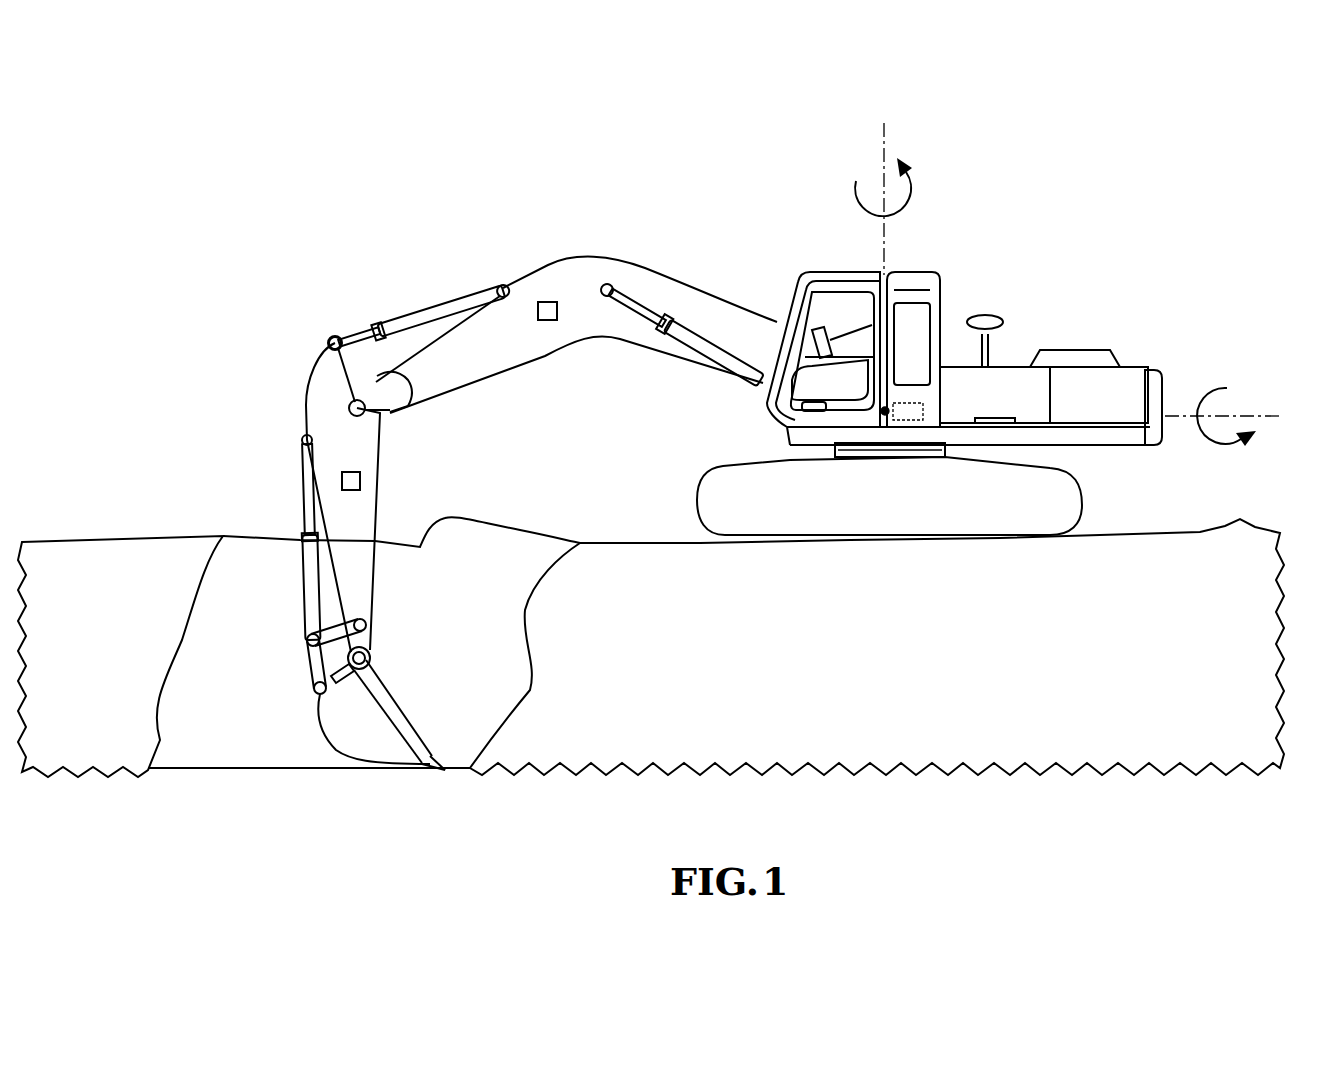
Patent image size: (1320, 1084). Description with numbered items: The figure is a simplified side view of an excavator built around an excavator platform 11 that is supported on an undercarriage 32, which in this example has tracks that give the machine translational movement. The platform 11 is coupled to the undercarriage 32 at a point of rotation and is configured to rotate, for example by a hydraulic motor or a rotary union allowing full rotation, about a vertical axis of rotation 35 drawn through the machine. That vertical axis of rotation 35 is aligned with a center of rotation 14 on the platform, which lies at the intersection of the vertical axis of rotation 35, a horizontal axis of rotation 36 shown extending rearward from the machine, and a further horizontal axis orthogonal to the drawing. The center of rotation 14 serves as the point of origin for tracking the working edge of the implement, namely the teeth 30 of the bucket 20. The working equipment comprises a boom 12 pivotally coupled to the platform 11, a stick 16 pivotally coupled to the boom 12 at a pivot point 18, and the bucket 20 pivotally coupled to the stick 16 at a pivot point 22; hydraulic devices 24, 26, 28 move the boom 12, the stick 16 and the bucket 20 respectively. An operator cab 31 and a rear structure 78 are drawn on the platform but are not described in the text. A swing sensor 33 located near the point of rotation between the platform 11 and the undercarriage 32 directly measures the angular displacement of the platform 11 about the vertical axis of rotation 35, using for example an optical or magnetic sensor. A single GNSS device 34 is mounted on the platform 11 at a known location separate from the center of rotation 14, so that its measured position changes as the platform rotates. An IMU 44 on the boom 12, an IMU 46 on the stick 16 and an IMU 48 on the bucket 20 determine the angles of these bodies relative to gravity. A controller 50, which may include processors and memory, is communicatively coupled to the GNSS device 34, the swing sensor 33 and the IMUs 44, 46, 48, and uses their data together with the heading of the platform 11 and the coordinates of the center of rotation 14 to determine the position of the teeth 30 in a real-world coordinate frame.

The excavator platform 11 is at (1131, 365).
The boom 12 is at (672, 292).
The center of rotation 14 is at (885, 415).
The stick 16 is at (307, 400).
The pivot point 18 is at (327, 346).
The bucket 20 is at (320, 724).
The pivot point 22 is at (372, 662).
The hydraulic device 24 is at (713, 343).
The hydraulic device 26 is at (440, 304).
The hydraulic device 28 is at (302, 470).
The teeth 30 is at (447, 760).
The operator cab 31 is at (836, 298).
The undercarriage 32 is at (1080, 495).
The swing sensor 33 is at (920, 458).
The GNSS device 34 is at (1003, 322).
The vertical axis of rotation 35 is at (884, 132).
The horizontal axis of rotation 36 is at (1268, 416).
The IMU 44 is at (547, 321).
The IMU 46 is at (361, 481).
The IMU 48 is at (331, 676).
The controller 50 is at (907, 400).
The machine sensor 78 is at (888, 280).